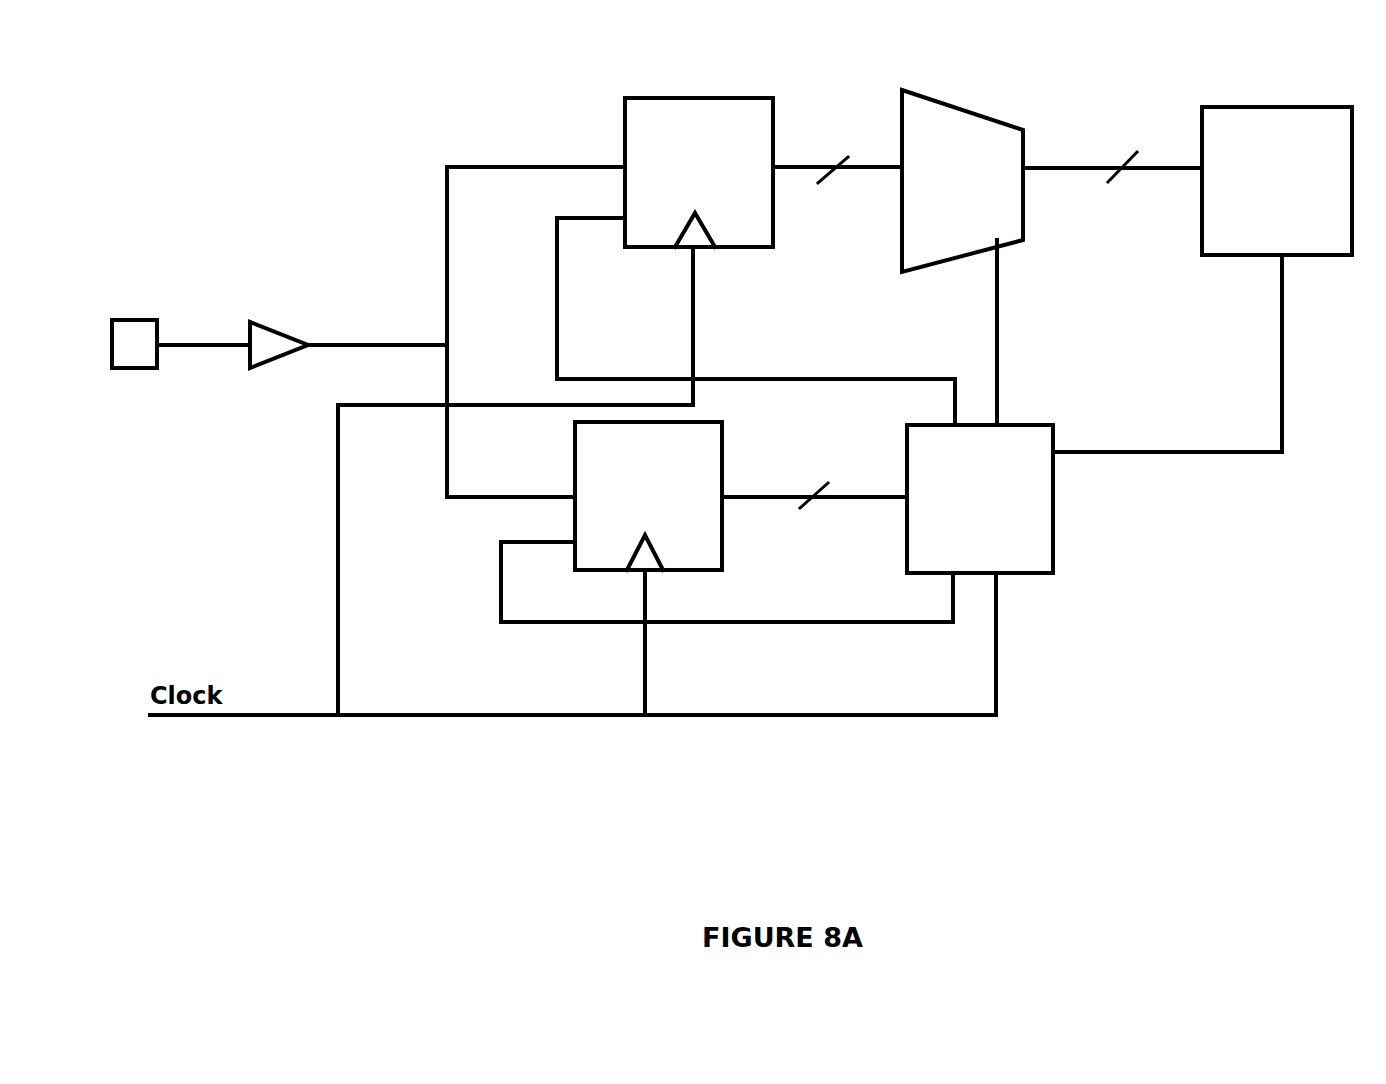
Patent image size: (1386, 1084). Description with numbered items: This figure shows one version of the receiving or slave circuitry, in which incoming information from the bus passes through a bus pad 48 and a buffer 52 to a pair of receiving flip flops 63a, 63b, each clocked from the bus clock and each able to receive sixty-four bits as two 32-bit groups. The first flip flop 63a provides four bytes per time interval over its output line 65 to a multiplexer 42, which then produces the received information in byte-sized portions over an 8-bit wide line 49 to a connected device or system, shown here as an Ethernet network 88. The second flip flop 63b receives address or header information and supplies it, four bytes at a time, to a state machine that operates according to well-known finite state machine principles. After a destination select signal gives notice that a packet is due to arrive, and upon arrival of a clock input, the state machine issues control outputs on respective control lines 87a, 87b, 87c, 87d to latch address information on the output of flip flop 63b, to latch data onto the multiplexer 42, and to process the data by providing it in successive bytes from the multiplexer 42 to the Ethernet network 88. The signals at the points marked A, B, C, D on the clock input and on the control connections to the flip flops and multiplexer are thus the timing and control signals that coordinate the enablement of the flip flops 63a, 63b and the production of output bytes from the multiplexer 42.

The bus pad 48 is at (140, 320).
The buffer 52 is at (263, 323).
The receiving flip flop 63a is at (680, 95).
The receiving flip flop 63b is at (722, 560).
The line 65 is at (785, 170).
The 32-bit group 32 is at (840, 318).
The multiplexer 42 is at (935, 98).
The line 49 is at (1043, 165).
The 8-bit wide path 8 is at (1132, 159).
The Ethernet network 88 is at (1267, 105).
The control line 87a is at (817, 625).
The control line 87b is at (783, 379).
The control line 87c is at (997, 357).
The control line 87d is at (1282, 420).
The clock input A is at (953, 713).
The signal B is at (895, 382).
The signal C is at (997, 402).
The signal D is at (1157, 448).